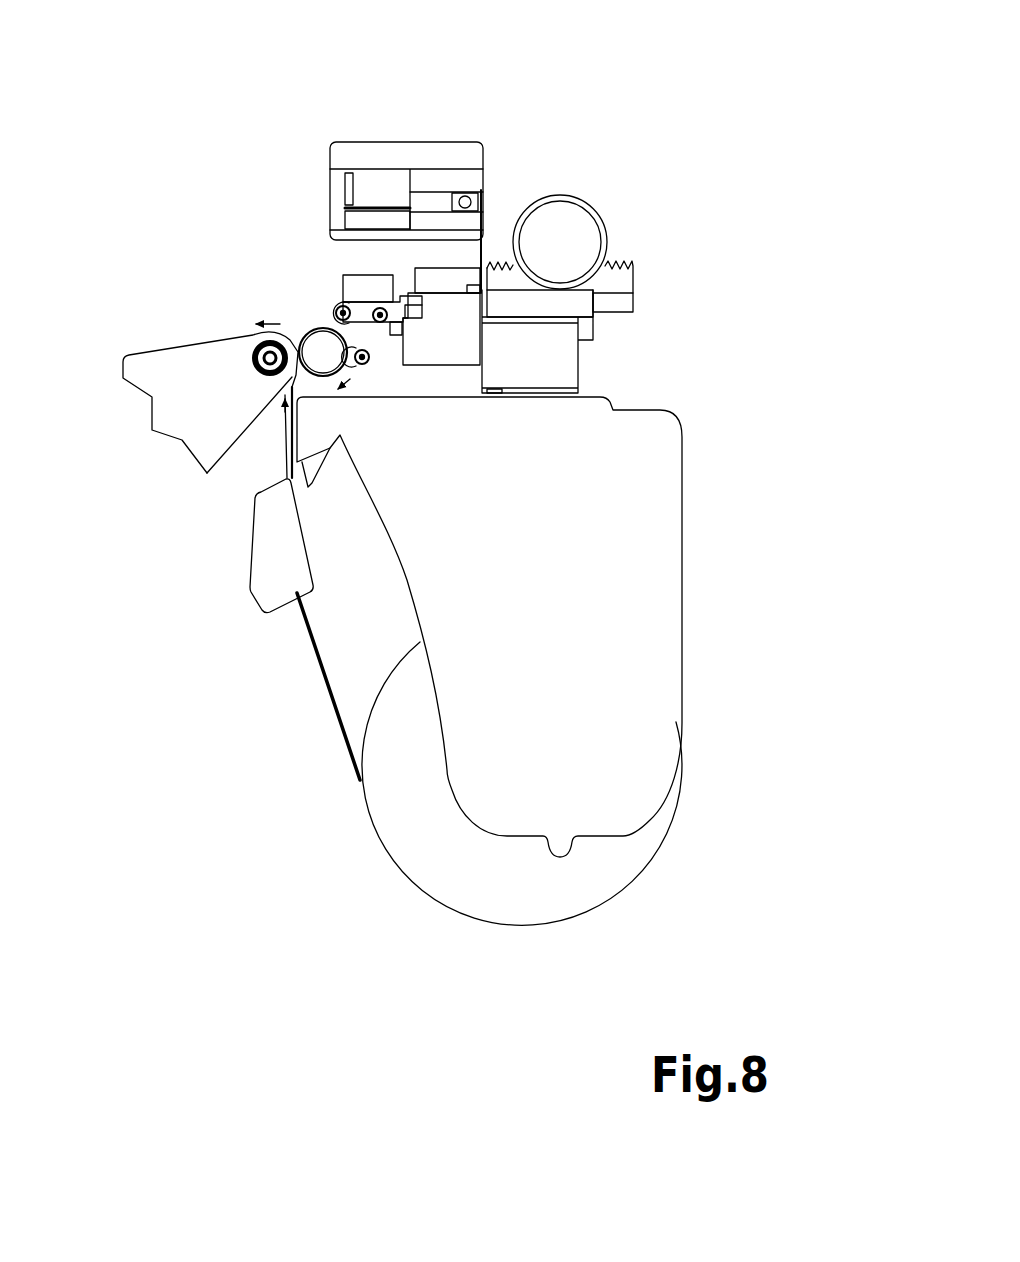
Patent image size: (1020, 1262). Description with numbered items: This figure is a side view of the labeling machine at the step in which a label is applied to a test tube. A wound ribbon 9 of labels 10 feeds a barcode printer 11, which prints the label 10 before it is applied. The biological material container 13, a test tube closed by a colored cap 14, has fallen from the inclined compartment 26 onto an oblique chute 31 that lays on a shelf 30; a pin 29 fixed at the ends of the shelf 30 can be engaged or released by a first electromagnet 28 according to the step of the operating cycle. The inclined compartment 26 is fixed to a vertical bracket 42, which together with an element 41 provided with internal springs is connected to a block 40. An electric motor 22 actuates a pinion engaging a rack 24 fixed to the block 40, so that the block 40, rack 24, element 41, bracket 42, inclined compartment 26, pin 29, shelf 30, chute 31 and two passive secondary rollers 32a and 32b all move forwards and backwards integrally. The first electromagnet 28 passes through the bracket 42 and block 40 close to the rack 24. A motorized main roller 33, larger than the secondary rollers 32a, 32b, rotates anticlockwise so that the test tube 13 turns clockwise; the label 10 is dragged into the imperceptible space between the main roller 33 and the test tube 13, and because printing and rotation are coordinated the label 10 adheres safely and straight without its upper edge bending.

The wound ribbon 9 is at (423, 787).
The label 10 is at (293, 377).
The barcode printer 11 is at (273, 560).
The biological material container 13 is at (322, 343).
The colored cap 14 is at (318, 380).
The electric motor 22 is at (560, 245).
The rack 24 is at (618, 277).
The inclined compartment 26 is at (378, 157).
The first electromagnet 28 is at (403, 310).
The pin 29 is at (385, 322).
The shelf 30 is at (363, 305).
The oblique chute 31 is at (358, 285).
The passive secondary roller 32a is at (343, 313).
The passive secondary roller 32b is at (365, 360).
The motorized main roller 33 is at (255, 334).
The block 40 is at (440, 338).
The element 41 is at (538, 367).
The vertical bracket 42 is at (490, 230).